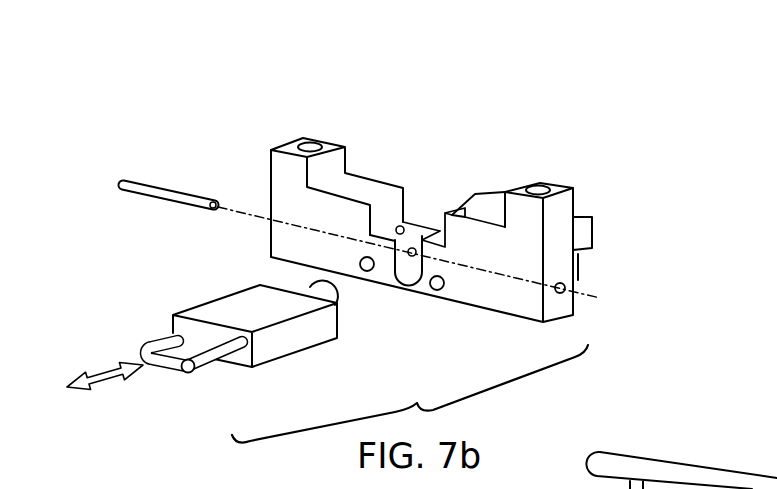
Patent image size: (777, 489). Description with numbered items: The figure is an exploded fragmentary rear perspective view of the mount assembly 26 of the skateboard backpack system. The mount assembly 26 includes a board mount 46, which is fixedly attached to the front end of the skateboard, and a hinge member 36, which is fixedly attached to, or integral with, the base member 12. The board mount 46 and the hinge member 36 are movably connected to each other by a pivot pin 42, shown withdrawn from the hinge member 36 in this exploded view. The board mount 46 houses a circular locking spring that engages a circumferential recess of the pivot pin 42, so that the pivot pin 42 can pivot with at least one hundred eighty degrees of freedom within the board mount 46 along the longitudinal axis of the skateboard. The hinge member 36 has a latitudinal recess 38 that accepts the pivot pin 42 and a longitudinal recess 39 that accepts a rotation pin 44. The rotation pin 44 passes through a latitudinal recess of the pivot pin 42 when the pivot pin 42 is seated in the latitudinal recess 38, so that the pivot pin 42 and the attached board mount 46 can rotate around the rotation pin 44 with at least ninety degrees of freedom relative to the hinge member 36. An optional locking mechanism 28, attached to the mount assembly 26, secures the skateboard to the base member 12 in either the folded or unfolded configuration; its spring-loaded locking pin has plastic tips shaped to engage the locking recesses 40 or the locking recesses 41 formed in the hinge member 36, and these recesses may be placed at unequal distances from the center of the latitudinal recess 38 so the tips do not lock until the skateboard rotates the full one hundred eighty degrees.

The mount assembly 26 is at (473, 188).
The latitudinal recess 38 is at (404, 208).
The base member 12 is at (428, 212).
The locking recesses 41 is at (443, 247).
The longitudinal recess 39 is at (290, 218).
The rotation pin 44 is at (145, 187).
The pivot pin 42 is at (303, 288).
The locking mechanism 28 is at (153, 332).
The board mount 46 is at (292, 355).
The locking recesses 40 is at (432, 293).
The hinge member 36 is at (577, 315).